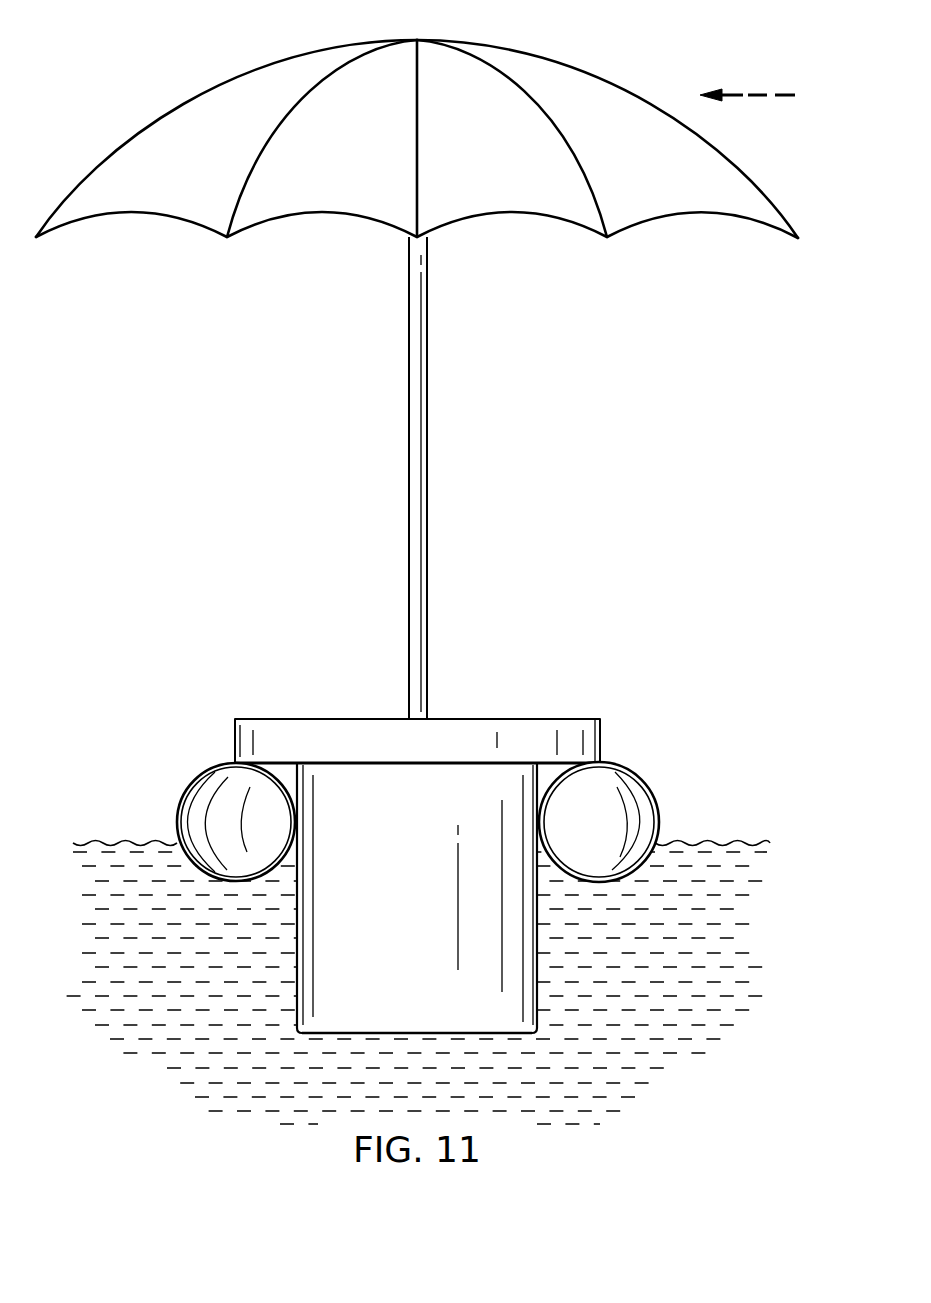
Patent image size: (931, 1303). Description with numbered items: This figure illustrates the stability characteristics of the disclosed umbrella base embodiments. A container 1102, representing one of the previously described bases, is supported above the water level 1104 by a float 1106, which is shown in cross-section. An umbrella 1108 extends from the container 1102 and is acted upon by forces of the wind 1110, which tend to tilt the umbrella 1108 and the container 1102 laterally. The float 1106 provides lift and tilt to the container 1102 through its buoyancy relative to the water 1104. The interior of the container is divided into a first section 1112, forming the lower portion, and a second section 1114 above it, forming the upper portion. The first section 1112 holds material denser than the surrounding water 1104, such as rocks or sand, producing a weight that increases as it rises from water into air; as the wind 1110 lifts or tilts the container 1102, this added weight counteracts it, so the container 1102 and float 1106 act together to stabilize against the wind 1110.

The container 1102 is at (515, 711).
The water level 1104 is at (113, 843).
The float 1106 is at (200, 775).
The umbrella 1108 is at (408, 421).
The wind 1110 is at (757, 88).
The first section 1112 is at (447, 1020).
The second section 1114 is at (355, 778).